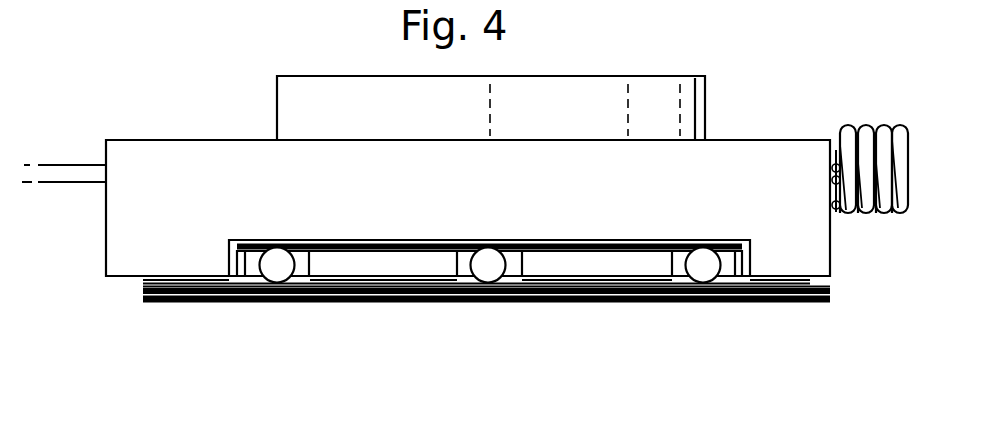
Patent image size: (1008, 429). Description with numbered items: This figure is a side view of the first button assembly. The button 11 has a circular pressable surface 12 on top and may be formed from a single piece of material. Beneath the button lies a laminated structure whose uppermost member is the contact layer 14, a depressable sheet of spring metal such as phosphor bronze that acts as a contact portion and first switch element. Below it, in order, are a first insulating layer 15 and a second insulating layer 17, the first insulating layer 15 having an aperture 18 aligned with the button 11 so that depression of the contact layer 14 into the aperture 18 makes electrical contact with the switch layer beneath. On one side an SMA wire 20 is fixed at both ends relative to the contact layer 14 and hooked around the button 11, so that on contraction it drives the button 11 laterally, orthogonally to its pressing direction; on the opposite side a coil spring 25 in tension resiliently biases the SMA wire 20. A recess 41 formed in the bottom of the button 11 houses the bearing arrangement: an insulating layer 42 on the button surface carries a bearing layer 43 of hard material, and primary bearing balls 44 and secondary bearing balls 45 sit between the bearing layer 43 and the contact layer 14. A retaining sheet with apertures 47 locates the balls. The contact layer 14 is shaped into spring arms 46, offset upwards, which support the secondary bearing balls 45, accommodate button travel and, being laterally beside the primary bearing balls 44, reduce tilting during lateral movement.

The button 11 is at (776, 158).
The pressable surface 12 is at (666, 90).
The contact layer 14 is at (394, 286).
The first insulating layer 15 is at (243, 303).
The second insulating layer 17 is at (173, 307).
The aperture 18 is at (205, 303).
The SMA wire 20 is at (74, 163).
The coil spring 25 is at (878, 130).
The recess 41 is at (596, 240).
The insulating layer 42 is at (353, 240).
The bearing layer 43 is at (421, 243).
The primary bearing balls 44 is at (494, 268).
The secondary bearing balls 45 is at (283, 268).
The spring arms 46 is at (167, 280).
The apertures 47 is at (310, 262).